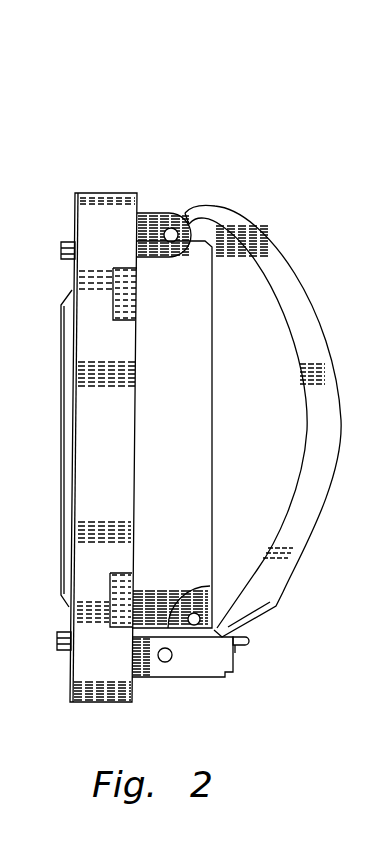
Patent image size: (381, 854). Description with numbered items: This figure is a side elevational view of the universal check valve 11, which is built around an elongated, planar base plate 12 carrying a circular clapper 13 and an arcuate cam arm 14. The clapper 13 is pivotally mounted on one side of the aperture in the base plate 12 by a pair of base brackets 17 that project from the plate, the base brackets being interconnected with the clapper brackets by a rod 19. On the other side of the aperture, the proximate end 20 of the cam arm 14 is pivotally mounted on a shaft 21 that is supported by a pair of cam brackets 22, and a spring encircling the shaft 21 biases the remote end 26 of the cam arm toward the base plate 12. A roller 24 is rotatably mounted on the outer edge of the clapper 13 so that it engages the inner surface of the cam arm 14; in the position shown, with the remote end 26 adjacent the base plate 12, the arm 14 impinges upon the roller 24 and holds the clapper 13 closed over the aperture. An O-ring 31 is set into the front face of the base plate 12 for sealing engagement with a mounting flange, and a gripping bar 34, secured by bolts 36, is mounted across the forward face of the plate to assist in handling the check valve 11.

The universal check valve 11 is at (240, 112).
The base plate 12 is at (93, 200).
The clapper 13 is at (212, 428).
The cam arm 14 is at (305, 288).
The base brackets 17 is at (147, 220).
The rod 19 is at (171, 229).
The proximate end 20 is at (233, 612).
The shaft 21 is at (165, 662).
The cam brackets 22 is at (225, 656).
The roller 24 is at (210, 618).
The remote end 26 is at (203, 204).
The O-ring 31 is at (73, 205).
The gripping bar 34 is at (60, 447).
The bolts 36 is at (61, 247).